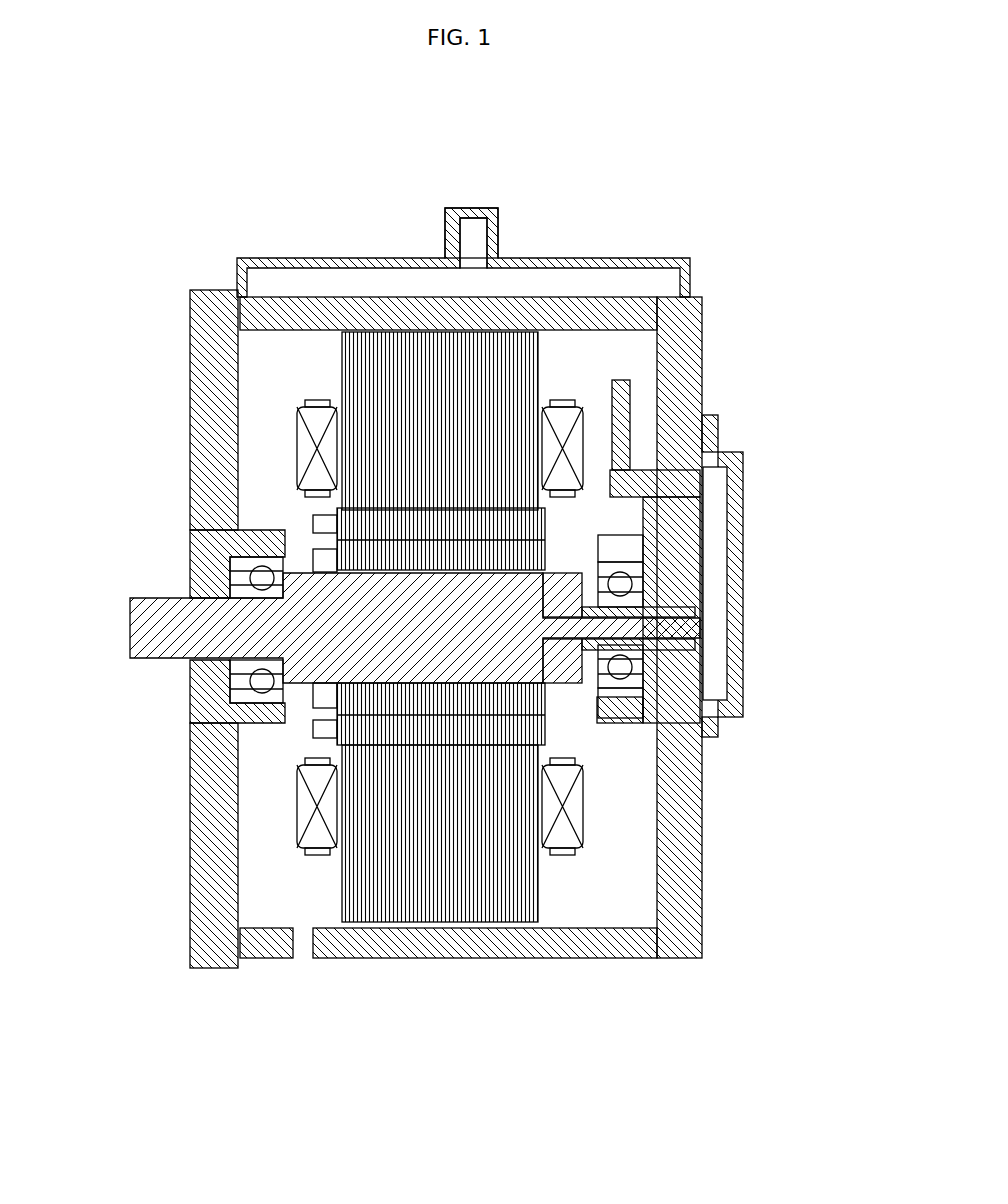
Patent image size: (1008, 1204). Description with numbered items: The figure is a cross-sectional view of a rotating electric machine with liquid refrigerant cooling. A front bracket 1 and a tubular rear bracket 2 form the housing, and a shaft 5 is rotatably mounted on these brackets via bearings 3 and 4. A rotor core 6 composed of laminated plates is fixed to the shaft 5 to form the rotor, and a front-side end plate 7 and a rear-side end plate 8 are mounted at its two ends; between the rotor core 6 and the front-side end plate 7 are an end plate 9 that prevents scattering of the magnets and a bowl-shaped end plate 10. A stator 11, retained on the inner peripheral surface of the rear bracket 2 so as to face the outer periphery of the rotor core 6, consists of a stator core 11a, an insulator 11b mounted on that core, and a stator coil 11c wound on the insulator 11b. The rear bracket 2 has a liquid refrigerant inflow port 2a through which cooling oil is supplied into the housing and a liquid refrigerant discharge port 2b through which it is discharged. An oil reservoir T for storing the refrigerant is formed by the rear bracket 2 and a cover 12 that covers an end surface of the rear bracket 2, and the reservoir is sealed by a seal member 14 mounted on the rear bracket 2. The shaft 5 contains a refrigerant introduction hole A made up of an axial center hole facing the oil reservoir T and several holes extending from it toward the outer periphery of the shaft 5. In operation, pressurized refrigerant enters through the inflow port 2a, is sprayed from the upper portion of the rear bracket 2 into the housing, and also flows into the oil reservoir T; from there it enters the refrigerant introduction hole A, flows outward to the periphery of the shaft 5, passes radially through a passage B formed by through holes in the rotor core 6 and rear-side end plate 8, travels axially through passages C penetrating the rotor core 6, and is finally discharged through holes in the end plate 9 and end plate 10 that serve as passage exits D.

The front bracket 1 is at (190, 290).
The rear bracket 2 is at (600, 257).
The liquid refrigerant inflow port 2a is at (470, 227).
The liquid refrigerant discharge port 2b is at (305, 943).
The bearing 3 is at (238, 587).
The bearing 4 is at (638, 587).
The shaft 5 is at (189, 648).
The rotor core 6 is at (512, 560).
The front-side end plate 7 is at (313, 559).
The rear-side end plate 8 is at (565, 557).
The end plate 9 is at (333, 742).
The bowl-shaped end plate 10 is at (335, 712).
The stator 11 is at (411, 514).
The stator core 11a is at (375, 365).
The insulator 11b is at (327, 403).
The stator coil 11c is at (300, 437).
The cover 12 is at (745, 567).
The seal member 14 is at (612, 630).
The oil reservoir T is at (712, 672).
The refrigerant introduction hole A is at (650, 662).
The passage B is at (655, 805).
The passages C is at (478, 716).
The passage exits D is at (335, 722).